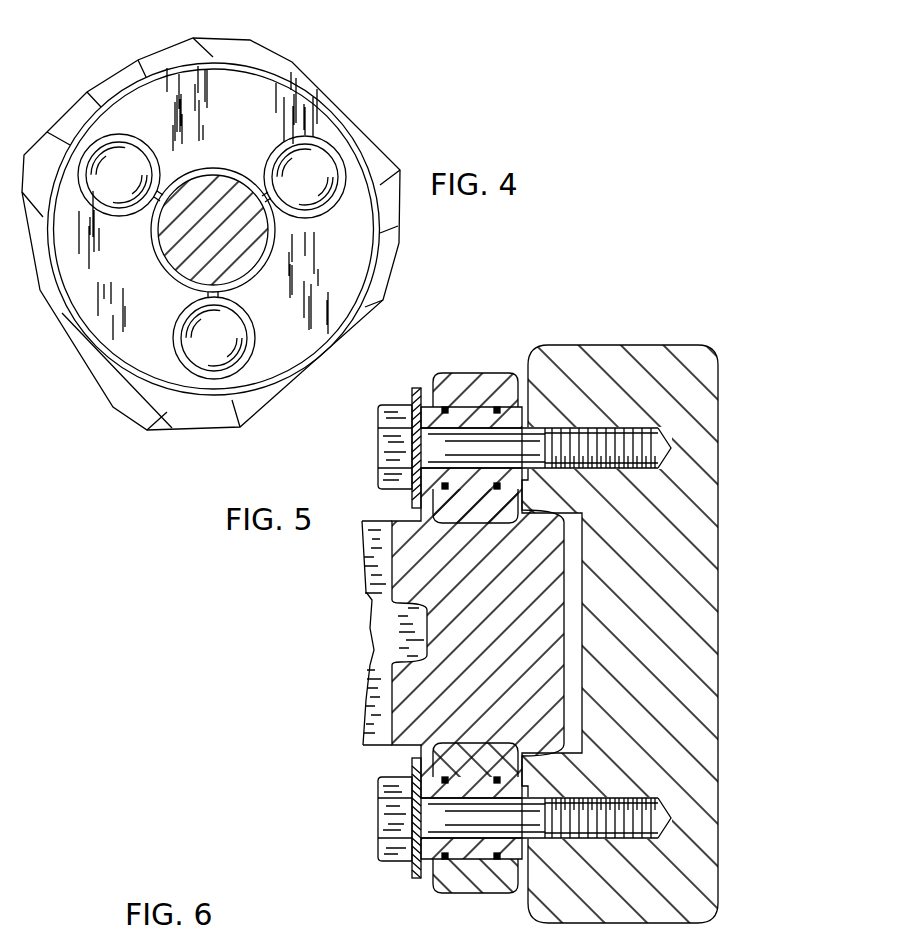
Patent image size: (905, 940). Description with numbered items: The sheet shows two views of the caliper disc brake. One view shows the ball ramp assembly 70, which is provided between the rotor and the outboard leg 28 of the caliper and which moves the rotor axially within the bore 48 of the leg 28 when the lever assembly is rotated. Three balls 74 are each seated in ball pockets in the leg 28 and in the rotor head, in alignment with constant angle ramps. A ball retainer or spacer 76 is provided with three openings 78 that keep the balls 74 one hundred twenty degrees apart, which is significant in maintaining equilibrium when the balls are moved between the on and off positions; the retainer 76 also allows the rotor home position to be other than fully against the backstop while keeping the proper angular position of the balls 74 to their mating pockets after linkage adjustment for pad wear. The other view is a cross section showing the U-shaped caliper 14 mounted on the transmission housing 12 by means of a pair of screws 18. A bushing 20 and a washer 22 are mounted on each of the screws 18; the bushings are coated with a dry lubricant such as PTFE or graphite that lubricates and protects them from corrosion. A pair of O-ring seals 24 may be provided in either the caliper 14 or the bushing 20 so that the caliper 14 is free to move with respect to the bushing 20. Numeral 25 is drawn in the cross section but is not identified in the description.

In FIG. 4, the ball ramp assembly 70 is at (288, 66).
In FIG. 4, the ball retainer or spacer 76 is at (312, 118).
In FIG. 4, the leg 28 is at (388, 212).
In FIG. 4, the openings 78 is at (152, 140).
In FIG. 4, the ball 74 is at (275, 155).
In FIG. 4, the bore 48 is at (178, 262).
In FIG. 5, the transmission housing 12 is at (720, 498).
In FIG. 5, the caliper 14 is at (368, 574).
In FIG. 5, the screws 18 is at (378, 450).
In FIG. 5, the bushing 20 is at (497, 395).
In FIG. 5, the washer 22 is at (412, 495).
In FIG. 5, the O-ring seals 24 is at (498, 407).
In FIG. 5, the bolt shank 25 is at (485, 460).